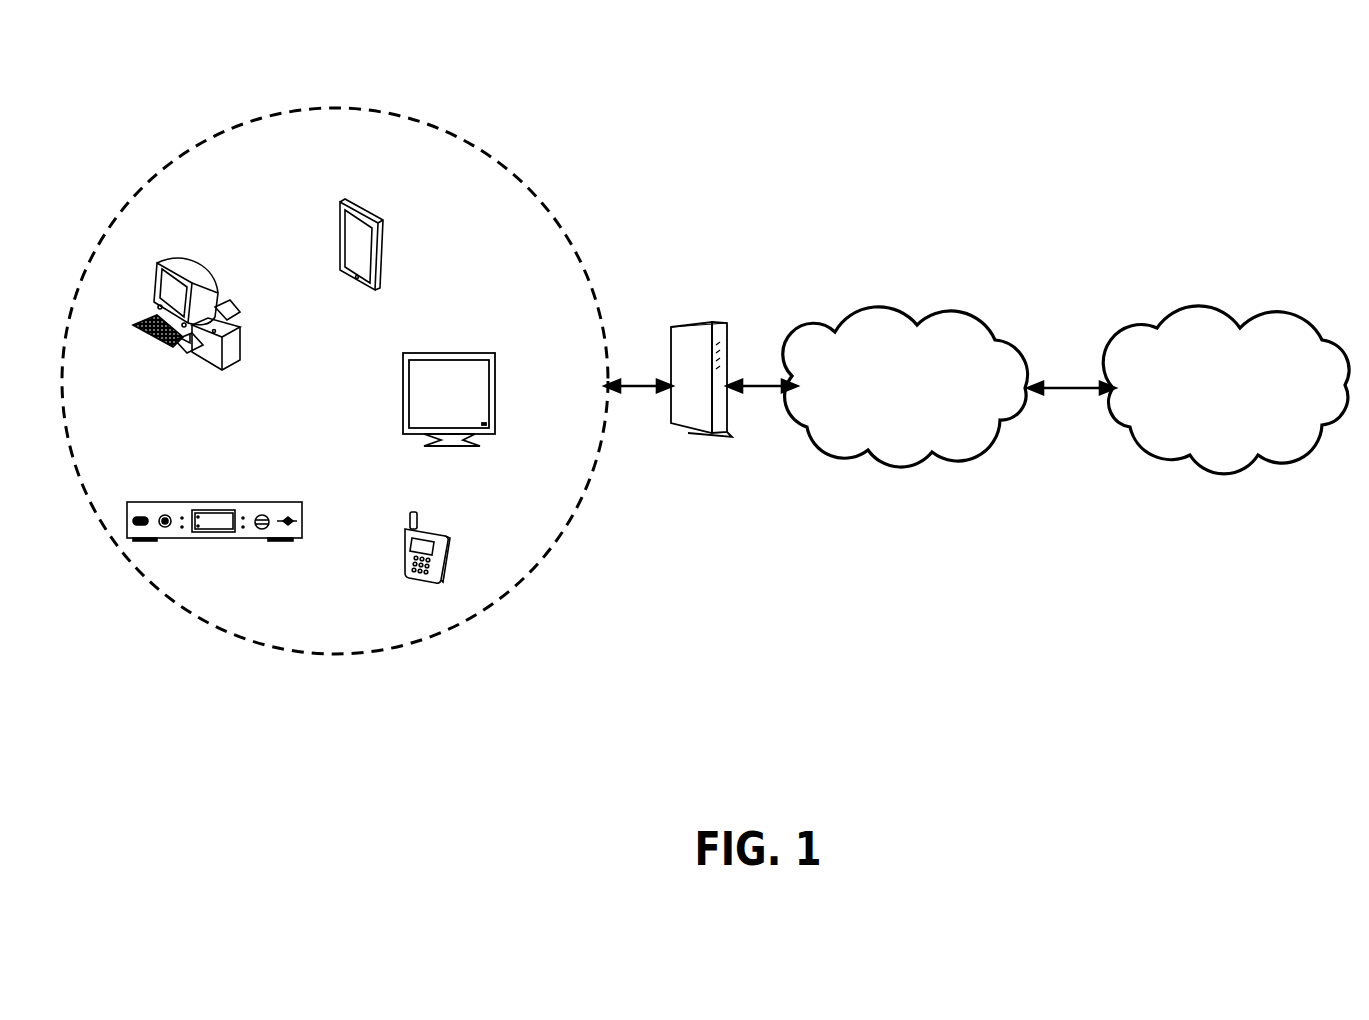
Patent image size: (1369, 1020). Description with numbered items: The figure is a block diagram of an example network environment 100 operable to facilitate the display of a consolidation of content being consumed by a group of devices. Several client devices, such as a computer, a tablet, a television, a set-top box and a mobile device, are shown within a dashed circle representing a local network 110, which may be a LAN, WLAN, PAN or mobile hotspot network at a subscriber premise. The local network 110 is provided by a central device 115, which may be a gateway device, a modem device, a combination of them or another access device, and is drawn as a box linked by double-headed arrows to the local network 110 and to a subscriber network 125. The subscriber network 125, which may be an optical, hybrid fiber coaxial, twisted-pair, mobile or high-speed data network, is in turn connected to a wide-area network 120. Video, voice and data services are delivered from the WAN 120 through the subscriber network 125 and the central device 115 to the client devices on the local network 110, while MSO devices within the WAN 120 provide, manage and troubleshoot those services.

The network environment 100 is at (1100, 771).
The local network 110 is at (535, 195).
The central device 115 is at (693, 320).
The wide-area network (WAN) 120 is at (1227, 472).
The subscriber network 125 is at (900, 470).